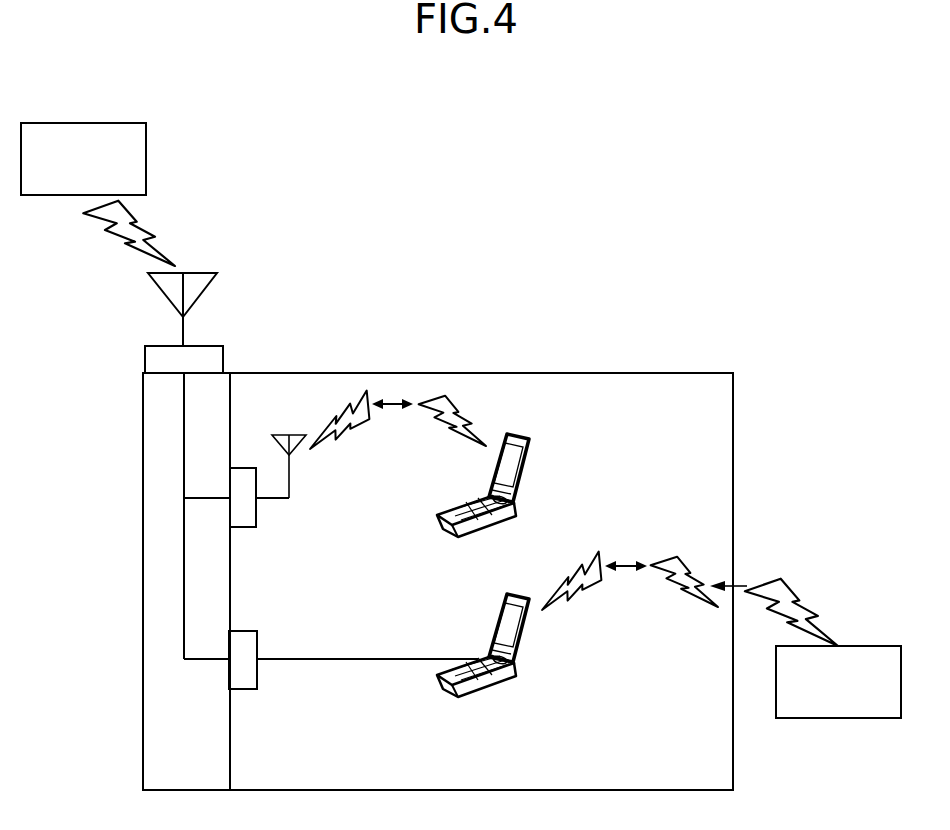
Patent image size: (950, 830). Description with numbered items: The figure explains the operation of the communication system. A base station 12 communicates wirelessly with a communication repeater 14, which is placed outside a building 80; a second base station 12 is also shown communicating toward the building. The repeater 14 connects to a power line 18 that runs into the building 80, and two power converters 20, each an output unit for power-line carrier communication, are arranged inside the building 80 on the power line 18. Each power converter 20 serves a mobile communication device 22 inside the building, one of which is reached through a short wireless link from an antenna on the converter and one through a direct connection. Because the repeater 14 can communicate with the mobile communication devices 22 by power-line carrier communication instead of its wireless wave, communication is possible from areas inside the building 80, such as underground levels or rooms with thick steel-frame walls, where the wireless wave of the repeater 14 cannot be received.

The base station 12 is at (97, 123).
The communication repeater 14 is at (228, 356).
The power line 18 is at (183, 459).
The power converter 20 is at (257, 514).
The mobile communication device 22 is at (518, 487).
The building 80 is at (655, 372).